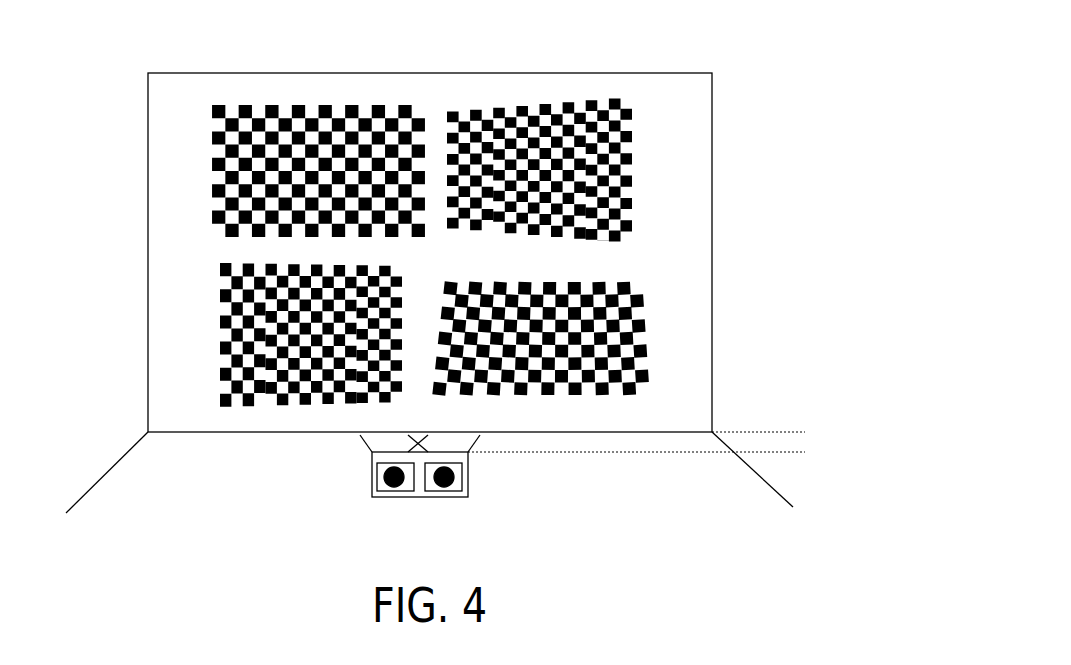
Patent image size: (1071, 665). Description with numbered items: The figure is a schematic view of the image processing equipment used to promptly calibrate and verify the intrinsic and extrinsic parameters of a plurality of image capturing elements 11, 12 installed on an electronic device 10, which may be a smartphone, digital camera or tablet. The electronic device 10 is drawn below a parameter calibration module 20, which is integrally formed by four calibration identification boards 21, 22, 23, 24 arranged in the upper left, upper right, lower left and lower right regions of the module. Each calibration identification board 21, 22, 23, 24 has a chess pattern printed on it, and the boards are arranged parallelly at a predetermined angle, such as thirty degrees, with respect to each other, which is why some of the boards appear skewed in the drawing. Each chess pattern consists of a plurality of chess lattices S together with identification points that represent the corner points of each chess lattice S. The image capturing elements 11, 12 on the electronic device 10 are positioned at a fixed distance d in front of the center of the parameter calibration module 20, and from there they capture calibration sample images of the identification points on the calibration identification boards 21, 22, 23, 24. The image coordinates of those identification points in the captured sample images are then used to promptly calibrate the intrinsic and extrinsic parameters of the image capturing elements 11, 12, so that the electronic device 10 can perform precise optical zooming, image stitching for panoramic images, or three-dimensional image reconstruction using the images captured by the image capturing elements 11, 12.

The electronic device 10 is at (471, 499).
The image capturing element 11 is at (394, 491).
The image capturing element 12 is at (444, 491).
The parameter calibration module 20 is at (712, 138).
The calibration identification board 21 is at (324, 100).
The calibration identification board 22 is at (636, 95).
The calibration identification board 23 is at (180, 347).
The calibration identification board 24 is at (684, 348).
The chess lattice S is at (507, 108).
The fixed distance d is at (803, 383).